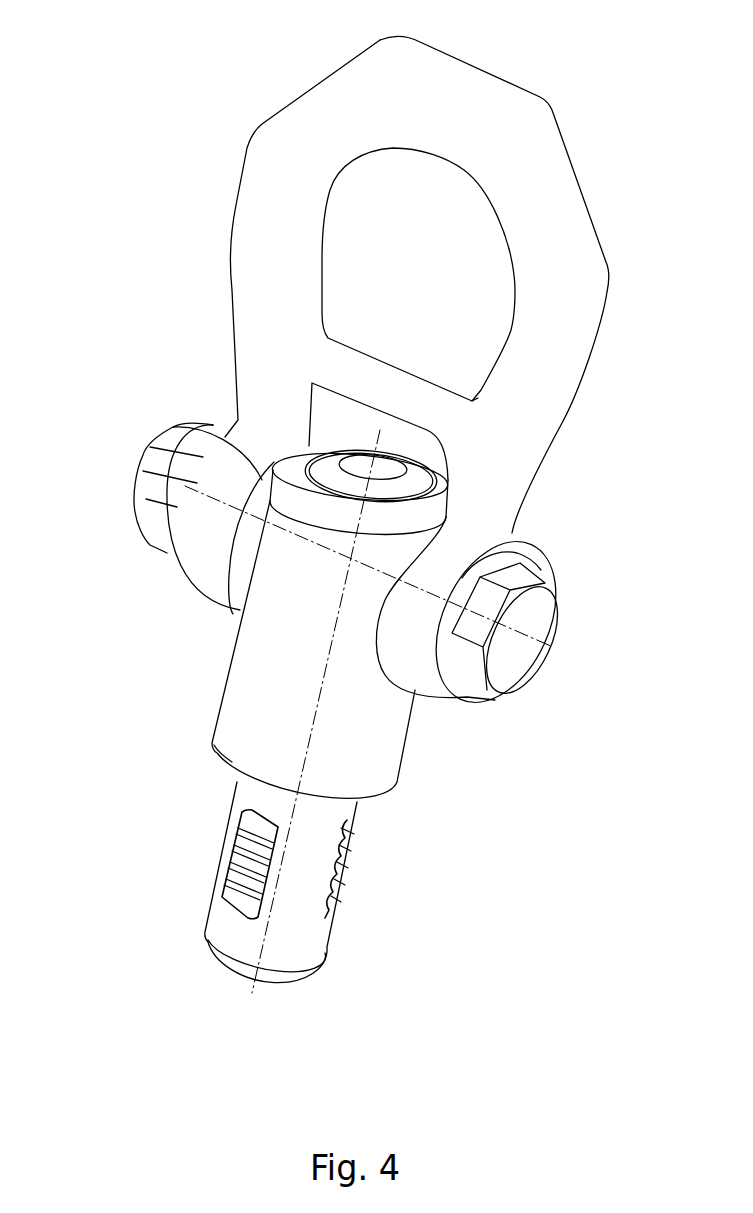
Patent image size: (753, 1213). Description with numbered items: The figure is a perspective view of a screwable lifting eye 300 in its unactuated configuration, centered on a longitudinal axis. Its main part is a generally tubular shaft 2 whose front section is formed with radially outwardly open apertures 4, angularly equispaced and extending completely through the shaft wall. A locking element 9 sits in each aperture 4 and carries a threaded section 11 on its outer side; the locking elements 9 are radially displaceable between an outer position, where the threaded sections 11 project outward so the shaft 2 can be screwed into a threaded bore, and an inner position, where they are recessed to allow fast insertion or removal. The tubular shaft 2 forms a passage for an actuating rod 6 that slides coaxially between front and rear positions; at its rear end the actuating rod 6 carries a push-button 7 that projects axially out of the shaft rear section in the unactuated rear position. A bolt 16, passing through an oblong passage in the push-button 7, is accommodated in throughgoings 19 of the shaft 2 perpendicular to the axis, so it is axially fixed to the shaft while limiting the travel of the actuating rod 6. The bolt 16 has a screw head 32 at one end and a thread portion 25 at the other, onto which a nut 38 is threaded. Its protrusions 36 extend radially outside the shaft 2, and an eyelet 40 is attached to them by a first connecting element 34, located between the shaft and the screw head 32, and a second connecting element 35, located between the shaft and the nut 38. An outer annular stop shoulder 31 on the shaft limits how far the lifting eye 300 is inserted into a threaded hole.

The lifting eye 300 is at (224, 170).
The eyelet 40 is at (457, 95).
The tubular shaft 2 is at (287, 678).
The push-button 7 is at (386, 421).
The actuating rod 6 is at (383, 477).
The outer annular stop shoulder 31 is at (228, 773).
The aperture 4 is at (295, 859).
The locking element 9 is at (295, 859).
The threaded section 11 is at (233, 855).
The bolt 16 is at (357, 544).
The thread portion 25 is at (152, 502).
The protrusion 36 is at (152, 562).
The nut 38 is at (147, 500).
The second connecting element 35 is at (243, 467).
The screw head 32 is at (533, 618).
The first connecting element 34 is at (470, 553).
The throughgoing 19 is at (253, 540).